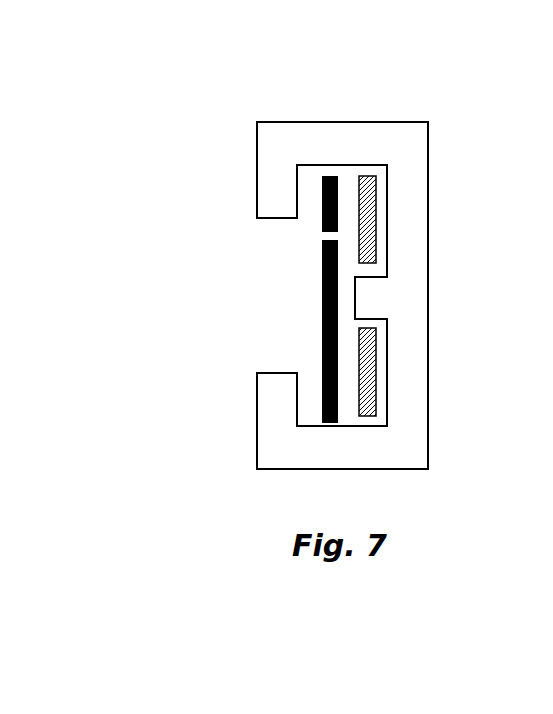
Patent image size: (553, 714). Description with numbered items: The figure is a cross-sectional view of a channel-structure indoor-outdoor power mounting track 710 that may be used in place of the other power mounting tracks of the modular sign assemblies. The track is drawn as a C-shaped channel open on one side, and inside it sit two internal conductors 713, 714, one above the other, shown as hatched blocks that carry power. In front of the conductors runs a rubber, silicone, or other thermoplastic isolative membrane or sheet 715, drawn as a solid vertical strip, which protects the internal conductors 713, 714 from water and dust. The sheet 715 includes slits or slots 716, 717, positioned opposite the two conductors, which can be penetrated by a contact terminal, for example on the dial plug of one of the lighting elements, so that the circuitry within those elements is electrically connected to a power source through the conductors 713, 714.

The power mounting track 710 is at (280, 110).
The internal conductor 713 is at (373, 203).
The internal conductor 714 is at (373, 356).
The isolative membrane or sheet 715 is at (320, 291).
The slit or slot 716 is at (320, 237).
The slit or slot 717 is at (337, 362).